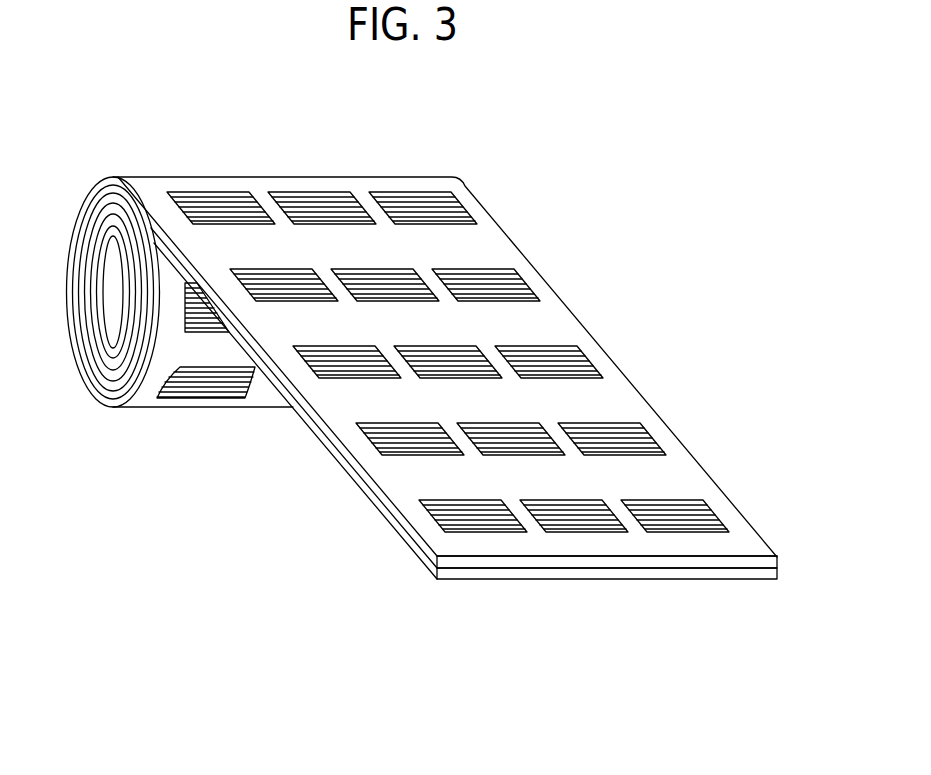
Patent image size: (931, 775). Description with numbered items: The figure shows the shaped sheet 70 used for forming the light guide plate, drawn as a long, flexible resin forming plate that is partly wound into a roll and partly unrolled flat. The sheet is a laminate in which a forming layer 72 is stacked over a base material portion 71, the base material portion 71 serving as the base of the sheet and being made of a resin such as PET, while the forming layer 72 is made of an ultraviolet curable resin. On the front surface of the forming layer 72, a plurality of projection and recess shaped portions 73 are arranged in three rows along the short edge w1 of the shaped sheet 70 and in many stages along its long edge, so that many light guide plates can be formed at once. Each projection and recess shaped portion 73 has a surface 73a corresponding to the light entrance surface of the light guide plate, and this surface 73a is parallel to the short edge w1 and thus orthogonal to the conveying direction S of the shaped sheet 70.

The shaped sheet 70 is at (645, 230).
The base material portion 71 is at (747, 580).
The forming layer 72 is at (753, 540).
The projection and recess shaped portion 73 is at (448, 370).
The surface 73a is at (455, 533).
The short edge w1 is at (548, 556).
The conveying direction S is at (617, 598).